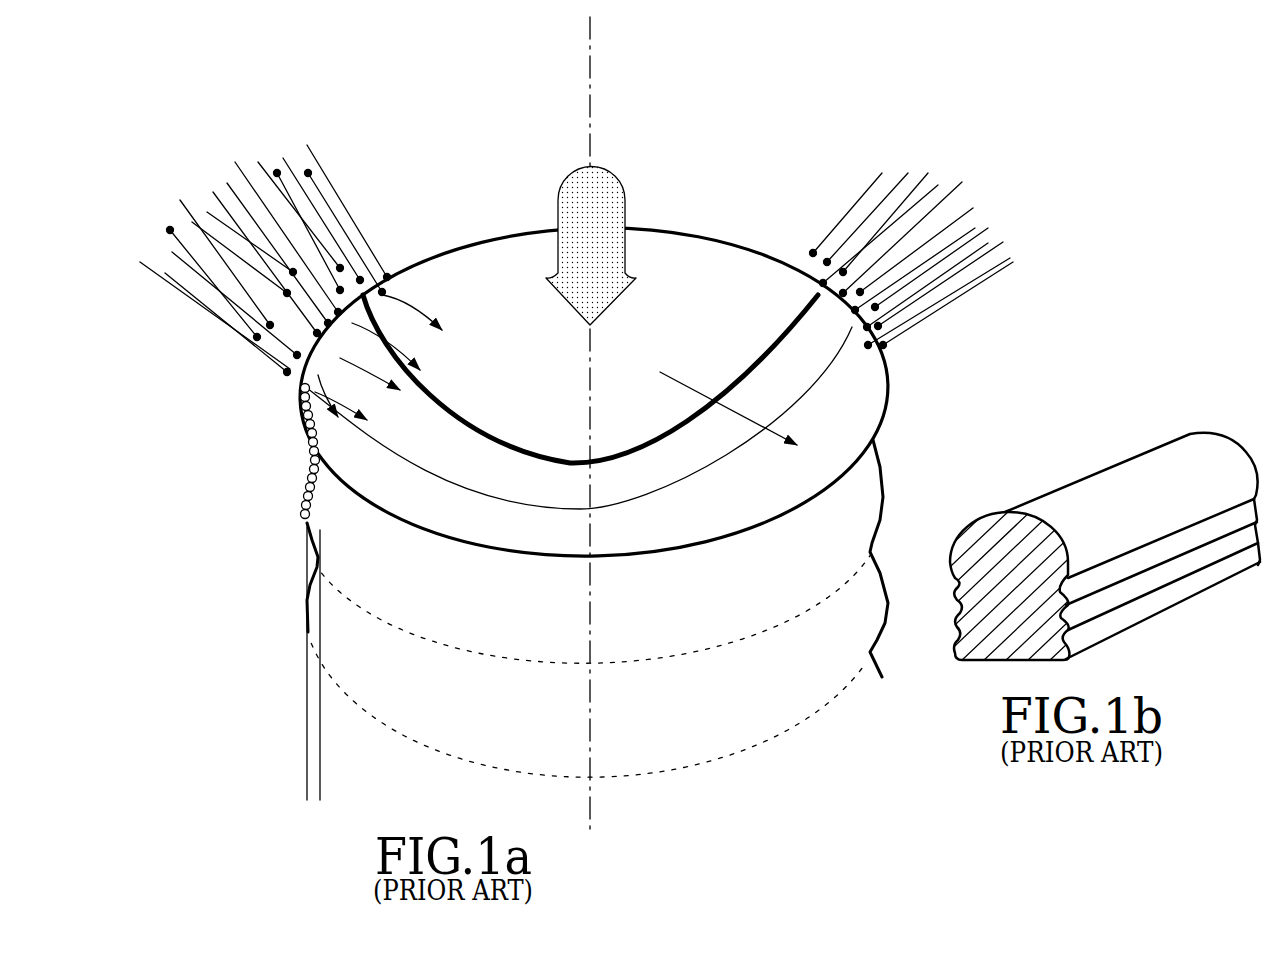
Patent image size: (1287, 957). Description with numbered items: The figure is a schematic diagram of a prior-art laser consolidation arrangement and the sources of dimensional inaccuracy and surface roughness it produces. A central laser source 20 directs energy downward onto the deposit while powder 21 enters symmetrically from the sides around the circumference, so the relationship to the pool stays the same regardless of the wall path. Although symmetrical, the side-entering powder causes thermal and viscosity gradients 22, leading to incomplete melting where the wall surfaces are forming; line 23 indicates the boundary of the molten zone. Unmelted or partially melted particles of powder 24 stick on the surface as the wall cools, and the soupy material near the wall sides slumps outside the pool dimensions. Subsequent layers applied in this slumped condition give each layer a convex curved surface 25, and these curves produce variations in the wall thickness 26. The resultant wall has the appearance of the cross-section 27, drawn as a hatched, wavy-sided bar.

In FIG. 1A, the central laser source 20 is at (625, 192).
In FIG. 1A, the powder 21 is at (182, 183).
In FIG. 1A, the thermal and viscosity gradients 22 is at (740, 403).
In FIG. 1A, the boundary of the molten zone 23 is at (540, 467).
In FIG. 1A, the unmelted or partially melted particles of powder 24 is at (298, 428).
In FIG. 1A, the convex curved surface 25 is at (890, 570).
In FIG. 1A, the wall thickness variations 26 is at (320, 698).
In FIG. 1B, the resultant wall 27 is at (1142, 508).